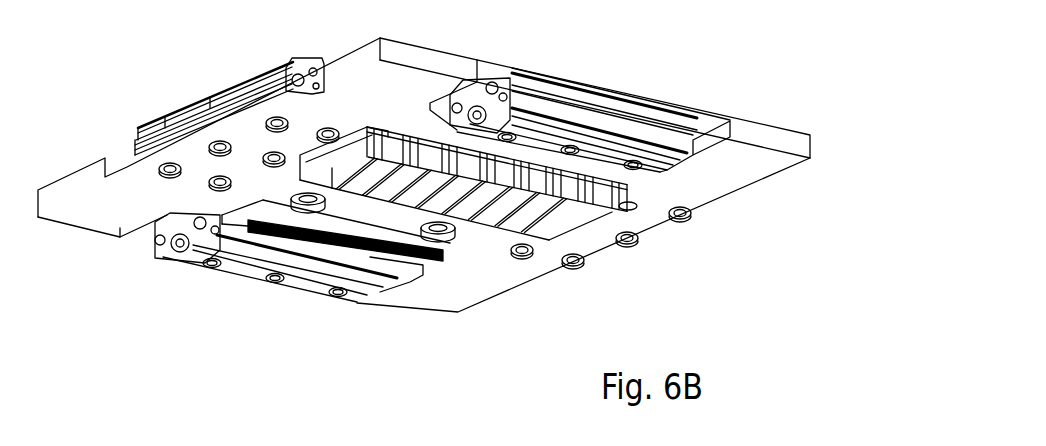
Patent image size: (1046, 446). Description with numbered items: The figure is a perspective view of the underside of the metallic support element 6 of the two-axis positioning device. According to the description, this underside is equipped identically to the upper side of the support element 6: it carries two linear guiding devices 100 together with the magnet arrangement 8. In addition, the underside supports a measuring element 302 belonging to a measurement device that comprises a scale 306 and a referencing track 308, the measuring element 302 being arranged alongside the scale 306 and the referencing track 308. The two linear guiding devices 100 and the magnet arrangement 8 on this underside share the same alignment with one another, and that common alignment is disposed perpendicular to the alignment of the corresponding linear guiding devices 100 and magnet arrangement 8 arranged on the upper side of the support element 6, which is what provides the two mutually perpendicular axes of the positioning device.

The base plate 6 is at (770, 130).
The magnet arrangement 8 is at (577, 213).
The linear guiding device 100 is at (190, 83).
The measuring element 302 is at (278, 228).
The scale 306 is at (372, 245).
The referencing track 308 is at (322, 254).